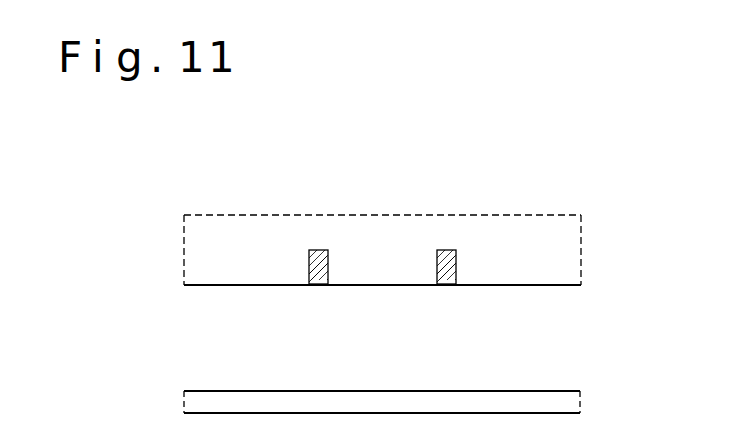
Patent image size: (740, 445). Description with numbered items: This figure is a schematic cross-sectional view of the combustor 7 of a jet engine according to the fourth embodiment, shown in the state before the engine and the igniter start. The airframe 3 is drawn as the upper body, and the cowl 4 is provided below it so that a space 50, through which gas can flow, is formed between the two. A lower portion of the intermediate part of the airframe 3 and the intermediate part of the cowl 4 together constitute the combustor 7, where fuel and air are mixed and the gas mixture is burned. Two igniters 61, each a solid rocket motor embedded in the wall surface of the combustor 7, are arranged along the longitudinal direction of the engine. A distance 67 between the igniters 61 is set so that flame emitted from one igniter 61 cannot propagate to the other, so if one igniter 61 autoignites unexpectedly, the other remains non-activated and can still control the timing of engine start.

The combustor 7 is at (582, 193).
The airframe 3 is at (565, 278).
The igniter 61 is at (314, 254).
The distance 67 is at (437, 267).
The space 50 is at (226, 356).
The cowl 4 is at (565, 405).